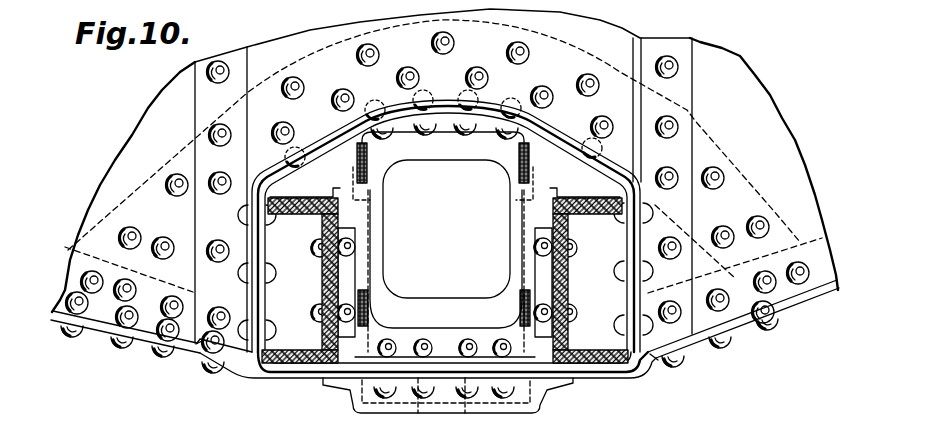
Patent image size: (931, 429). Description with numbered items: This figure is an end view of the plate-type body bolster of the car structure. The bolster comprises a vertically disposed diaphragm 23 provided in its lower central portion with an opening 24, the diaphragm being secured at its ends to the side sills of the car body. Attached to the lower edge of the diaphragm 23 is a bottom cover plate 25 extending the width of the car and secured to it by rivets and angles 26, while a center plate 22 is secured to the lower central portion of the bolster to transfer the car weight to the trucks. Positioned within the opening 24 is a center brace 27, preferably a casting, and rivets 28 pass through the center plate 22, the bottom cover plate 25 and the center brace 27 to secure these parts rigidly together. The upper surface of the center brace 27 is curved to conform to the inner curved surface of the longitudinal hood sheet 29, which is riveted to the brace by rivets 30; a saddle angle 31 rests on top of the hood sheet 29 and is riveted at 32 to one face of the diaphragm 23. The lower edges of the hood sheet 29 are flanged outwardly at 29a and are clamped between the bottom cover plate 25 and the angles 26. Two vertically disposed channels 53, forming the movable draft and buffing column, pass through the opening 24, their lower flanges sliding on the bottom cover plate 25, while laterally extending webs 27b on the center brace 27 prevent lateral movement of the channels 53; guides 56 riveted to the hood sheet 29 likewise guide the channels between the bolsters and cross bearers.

The center plate 22 is at (545, 404).
The diaphragm 23 is at (145, 138).
The opening 24 is at (277, 338).
The bottom cover plate 25 is at (110, 327).
The angles 26 is at (63, 316).
The center brace 27 is at (375, 256).
The laterally extending webs 27b is at (343, 213).
The rivets 28 is at (502, 340).
The hood sheet 29 is at (260, 256).
The outwardly flanged lower edges 29a is at (208, 353).
The rivets 30 is at (507, 135).
The saddle angle 31 is at (274, 93).
The rivets 32 is at (360, 60).
The channels 53 is at (562, 276).
The guides 56 is at (321, 280).